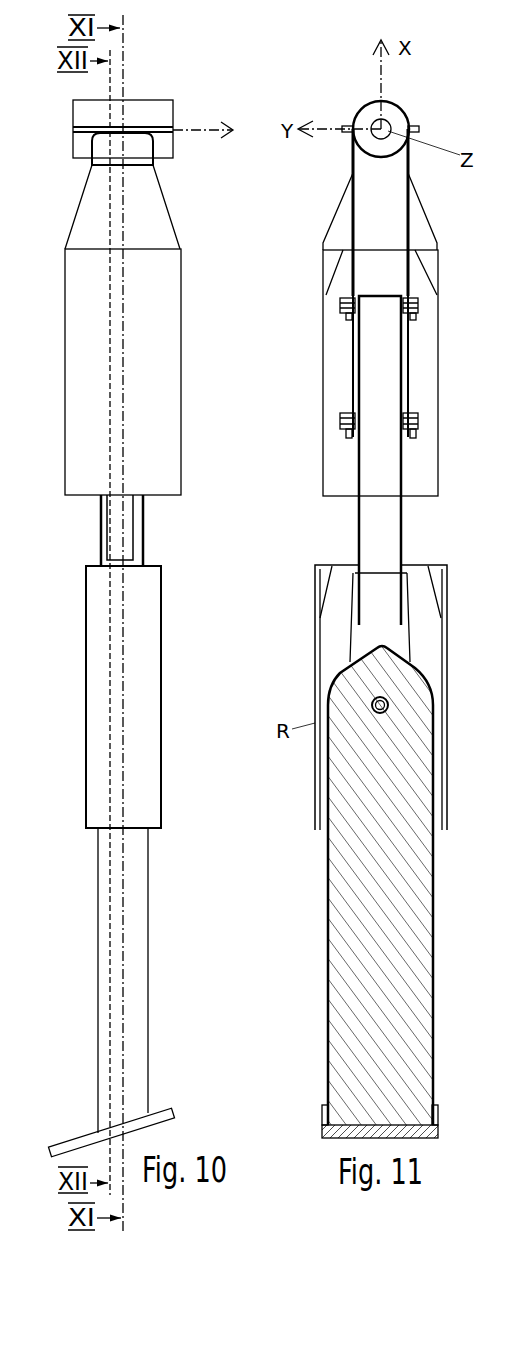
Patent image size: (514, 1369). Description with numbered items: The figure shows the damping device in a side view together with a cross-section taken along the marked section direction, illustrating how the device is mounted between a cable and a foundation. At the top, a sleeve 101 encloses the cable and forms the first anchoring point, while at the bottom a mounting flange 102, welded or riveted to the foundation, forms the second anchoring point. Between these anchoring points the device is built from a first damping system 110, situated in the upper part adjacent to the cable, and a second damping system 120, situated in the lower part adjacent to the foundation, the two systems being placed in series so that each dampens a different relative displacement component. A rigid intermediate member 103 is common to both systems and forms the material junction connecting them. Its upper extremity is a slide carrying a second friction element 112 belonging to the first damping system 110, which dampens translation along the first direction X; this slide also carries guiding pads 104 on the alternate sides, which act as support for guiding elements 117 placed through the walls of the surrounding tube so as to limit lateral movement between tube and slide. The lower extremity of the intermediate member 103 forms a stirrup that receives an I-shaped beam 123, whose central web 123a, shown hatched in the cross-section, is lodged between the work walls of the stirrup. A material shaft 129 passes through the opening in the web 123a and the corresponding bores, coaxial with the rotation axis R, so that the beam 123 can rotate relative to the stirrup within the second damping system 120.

In FIG. 10, the sleeve 101 is at (148, 107).
In FIG. 11, the sleeve 101 is at (357, 108).
In FIG. 10, the mounting flange 102 is at (73, 1148).
In FIG. 11, the mounting flange 102 is at (424, 1138).
In FIG. 10, the intermediate member 103 is at (97, 532).
In FIG. 11, the intermediate member 103 is at (404, 542).
In FIG. 11, the guiding pads 104 is at (403, 352).
In FIG. 11, the first damping system 110 is at (275, 250).
In FIG. 10, the second friction element 112 is at (128, 541).
In FIG. 11, the guiding elements 117 is at (414, 299).
In FIG. 11, the second damping system 120 is at (275, 553).
In FIG. 10, the I-shaped beam 123 is at (84, 976).
In FIG. 11, the central web 123a is at (412, 938).
In FIG. 11, the material shaft 129 is at (315, 723).